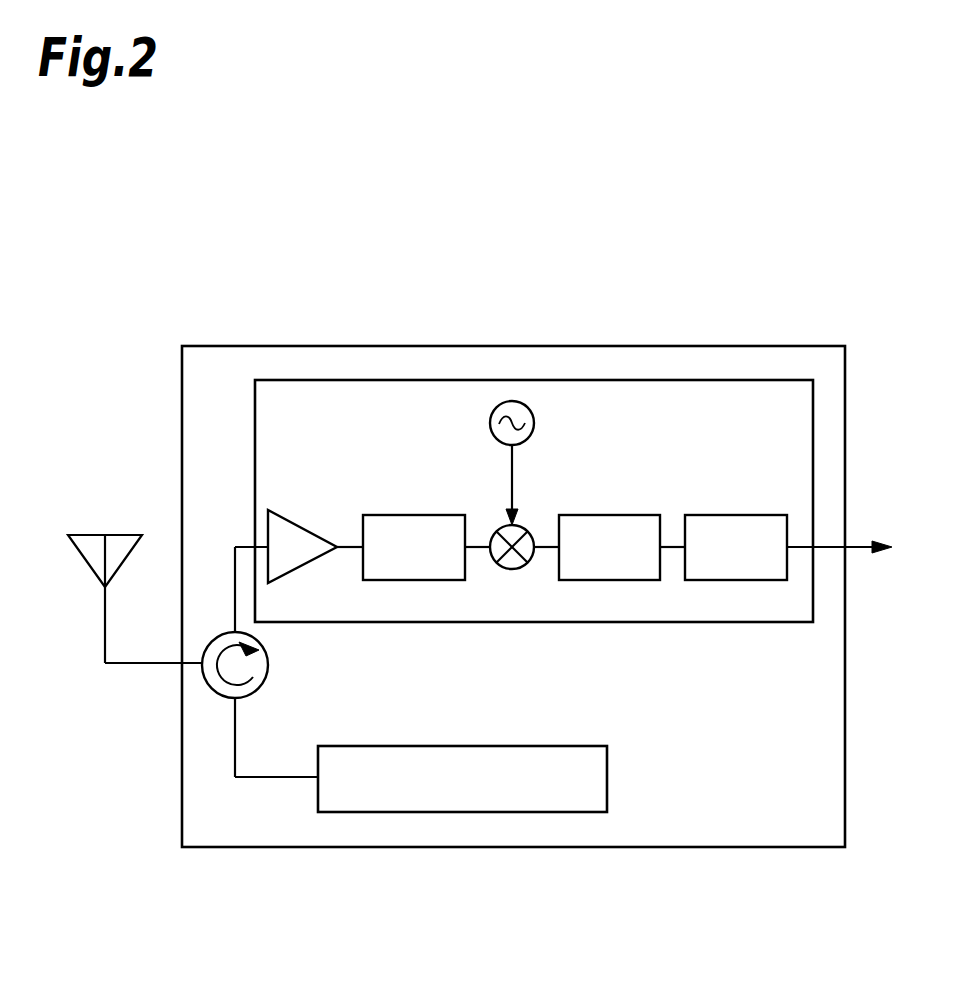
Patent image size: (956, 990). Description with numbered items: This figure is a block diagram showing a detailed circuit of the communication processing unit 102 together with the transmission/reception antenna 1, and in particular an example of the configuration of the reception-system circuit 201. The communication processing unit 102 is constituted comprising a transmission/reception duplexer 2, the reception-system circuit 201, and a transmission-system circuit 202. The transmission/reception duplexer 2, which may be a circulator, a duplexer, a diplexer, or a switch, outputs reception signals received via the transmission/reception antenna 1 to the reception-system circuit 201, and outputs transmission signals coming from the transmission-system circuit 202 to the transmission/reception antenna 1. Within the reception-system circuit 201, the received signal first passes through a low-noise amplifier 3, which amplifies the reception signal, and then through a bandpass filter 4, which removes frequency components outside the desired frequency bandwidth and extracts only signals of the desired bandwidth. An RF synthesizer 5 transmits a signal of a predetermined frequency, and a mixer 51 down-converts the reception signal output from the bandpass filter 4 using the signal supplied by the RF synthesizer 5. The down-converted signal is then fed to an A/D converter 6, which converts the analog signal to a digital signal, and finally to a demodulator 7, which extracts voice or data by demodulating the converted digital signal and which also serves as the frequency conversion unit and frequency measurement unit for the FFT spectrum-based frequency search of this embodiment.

The transmission/reception antenna 1 is at (119, 535).
The transmission/reception duplexer 2 is at (268, 665).
The low-noise amplifier 3 is at (314, 530).
The bandpass filter 4 is at (434, 515).
The RF synthesizer 5 is at (535, 423).
The mixer 51 is at (510, 569).
The A/D converter 6 is at (636, 515).
The demodulator 7 is at (762, 515).
The communication processing unit 102 is at (780, 346).
The reception-system circuit 201 is at (759, 622).
The transmission-system circuit 202 is at (607, 779).